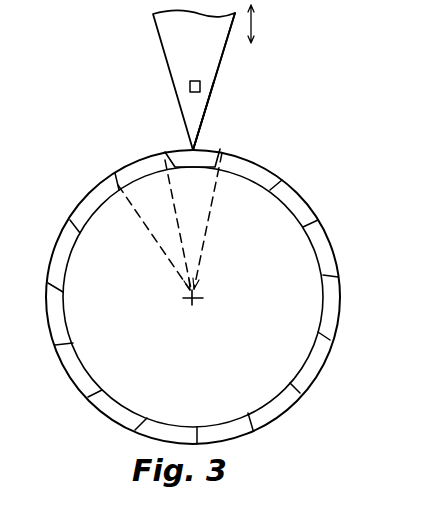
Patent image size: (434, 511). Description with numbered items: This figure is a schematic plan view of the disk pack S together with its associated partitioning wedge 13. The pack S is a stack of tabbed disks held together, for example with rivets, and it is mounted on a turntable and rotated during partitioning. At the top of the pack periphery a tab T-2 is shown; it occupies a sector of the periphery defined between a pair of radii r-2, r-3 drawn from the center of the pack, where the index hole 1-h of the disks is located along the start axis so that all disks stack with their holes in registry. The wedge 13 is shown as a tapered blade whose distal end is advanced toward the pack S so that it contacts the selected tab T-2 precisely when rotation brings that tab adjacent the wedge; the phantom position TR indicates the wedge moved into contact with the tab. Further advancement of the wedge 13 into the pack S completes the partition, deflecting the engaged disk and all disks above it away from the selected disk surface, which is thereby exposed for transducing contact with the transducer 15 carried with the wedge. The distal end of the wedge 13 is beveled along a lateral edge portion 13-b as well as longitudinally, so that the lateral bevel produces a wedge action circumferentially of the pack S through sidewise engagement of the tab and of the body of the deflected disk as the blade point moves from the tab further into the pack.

The wedge 13 is at (160, 43).
The phantom position of wedge TR is at (218, 72).
The lateral edge portion 13-b is at (212, 108).
The transducer 15 is at (188, 86).
The tab T-2 is at (217, 155).
The pack S is at (84, 192).
The radius r-2 is at (176, 238).
The radius r-3 is at (207, 234).
The index hole 1-h is at (184, 318).